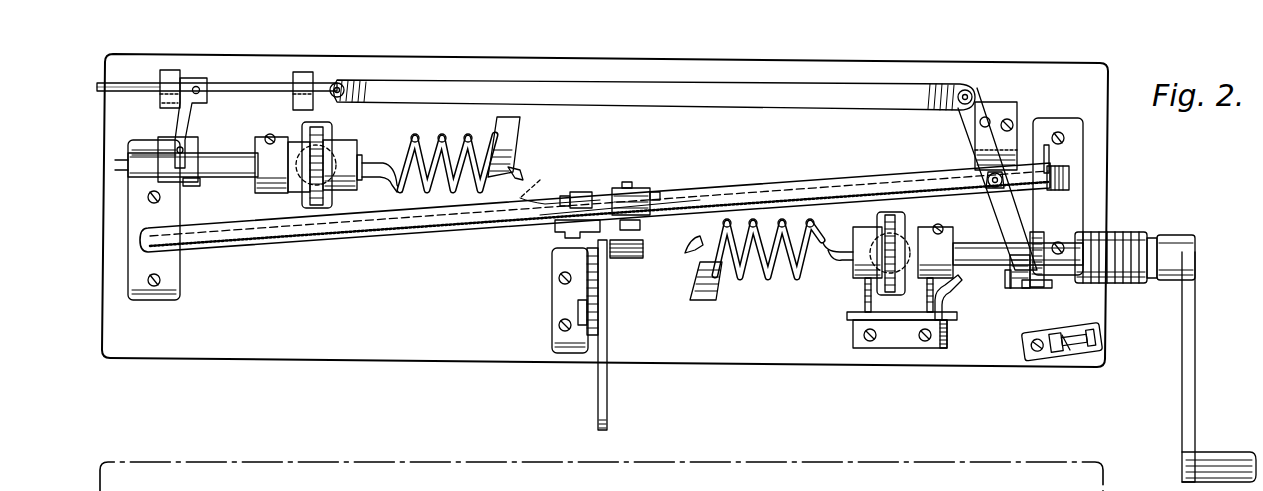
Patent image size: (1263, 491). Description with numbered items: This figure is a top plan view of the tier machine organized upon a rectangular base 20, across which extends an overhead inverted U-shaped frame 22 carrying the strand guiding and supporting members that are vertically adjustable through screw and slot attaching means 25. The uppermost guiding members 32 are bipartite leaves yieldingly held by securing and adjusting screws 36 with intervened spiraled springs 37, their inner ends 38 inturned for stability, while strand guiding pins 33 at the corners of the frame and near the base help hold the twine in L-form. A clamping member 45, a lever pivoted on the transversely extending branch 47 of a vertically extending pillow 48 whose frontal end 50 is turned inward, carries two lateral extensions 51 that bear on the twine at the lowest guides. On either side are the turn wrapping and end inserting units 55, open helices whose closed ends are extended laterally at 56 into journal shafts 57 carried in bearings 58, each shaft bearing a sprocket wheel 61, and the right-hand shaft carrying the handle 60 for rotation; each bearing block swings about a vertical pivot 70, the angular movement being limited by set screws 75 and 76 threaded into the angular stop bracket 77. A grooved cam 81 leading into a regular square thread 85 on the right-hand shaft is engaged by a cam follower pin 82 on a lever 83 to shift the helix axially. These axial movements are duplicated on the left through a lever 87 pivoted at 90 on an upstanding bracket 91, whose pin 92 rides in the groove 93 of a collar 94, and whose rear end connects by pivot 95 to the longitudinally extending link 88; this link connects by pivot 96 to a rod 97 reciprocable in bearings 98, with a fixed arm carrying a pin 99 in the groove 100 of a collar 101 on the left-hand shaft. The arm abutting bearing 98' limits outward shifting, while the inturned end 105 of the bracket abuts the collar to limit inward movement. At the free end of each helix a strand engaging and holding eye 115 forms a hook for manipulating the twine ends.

The base 20 is at (355, 358).
The overhead inverted U-shaped frame 22 is at (425, 238).
The screw and slot attaching means 25 is at (633, 188).
The uppermost strand guiding and supporting member 32 is at (528, 190).
The strand guiding and supporting pin 33 is at (165, 265).
The securing and adjusting screw 36 is at (580, 192).
The spiraled spring 37 is at (565, 210).
The inner end of guiding member 38 is at (612, 182).
The clamping member 45 is at (607, 350).
The transversely extending branch 47 is at (598, 318).
The vertically extending pillow 48 is at (562, 305).
The frontal end 50 is at (590, 328).
The lateral extension 51 is at (634, 258).
The turn wrapping and end inserting unit 55 is at (444, 132).
The lateral extension of endmost turn 56 is at (383, 162).
The journal shaft 57 is at (218, 158).
The bearing 58 is at (345, 192).
The handle 60 is at (1195, 355).
The sprocket wheel 61 is at (312, 205).
The vertically extending pivot 70 is at (322, 160).
The left hand set screw stop 75 is at (865, 342).
The right hand set screw stop 76 is at (910, 348).
The angular stop bracket 77 is at (940, 345).
The grooved cam 81 is at (1152, 240).
The cam follower pin 82 is at (1080, 335).
The lever 83 is at (1078, 360).
The regular square thread 85 is at (1120, 232).
The lever 87 is at (998, 115).
The longitudinally extending link 88 is at (795, 83).
The pivot 90 is at (990, 175).
The upstanding bracket 91 is at (1046, 145).
The pin 92 is at (1048, 285).
The groove 93 is at (1022, 288).
The collar 94 is at (1005, 281).
The pivot 95 is at (966, 90).
The pivot 96 is at (342, 83).
The rod 97 is at (240, 82).
The bearing 98 is at (310, 68).
The bearing 98' is at (176, 67).
The pin 99 is at (200, 112).
The groove 100 is at (188, 188).
The collar 101 is at (158, 150).
The inturned end 105 is at (958, 300).
The strand engaging and holding eye 115 is at (690, 250).